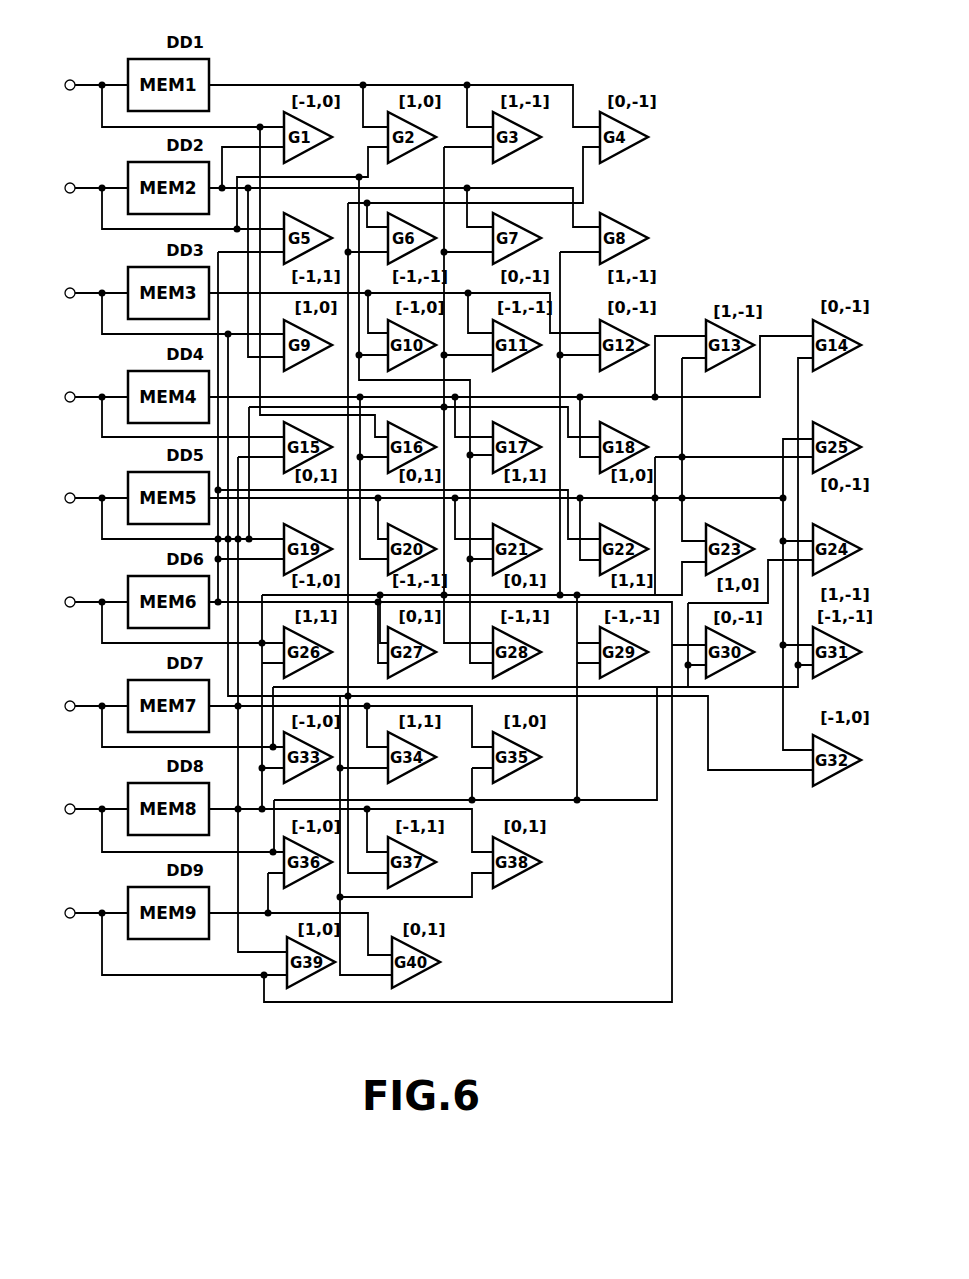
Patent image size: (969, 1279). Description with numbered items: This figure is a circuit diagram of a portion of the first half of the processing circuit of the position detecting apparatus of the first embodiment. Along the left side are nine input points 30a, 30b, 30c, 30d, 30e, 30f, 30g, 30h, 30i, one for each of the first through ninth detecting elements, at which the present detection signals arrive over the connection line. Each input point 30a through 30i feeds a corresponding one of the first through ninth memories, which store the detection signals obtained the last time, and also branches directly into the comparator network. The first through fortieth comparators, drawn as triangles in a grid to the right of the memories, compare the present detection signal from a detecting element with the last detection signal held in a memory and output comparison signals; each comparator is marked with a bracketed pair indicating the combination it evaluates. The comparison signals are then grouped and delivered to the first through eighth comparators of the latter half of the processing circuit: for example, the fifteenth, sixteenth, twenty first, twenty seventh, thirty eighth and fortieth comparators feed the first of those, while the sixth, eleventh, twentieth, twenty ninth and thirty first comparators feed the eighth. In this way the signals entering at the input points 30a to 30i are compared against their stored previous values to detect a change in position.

The input terminal 30a is at (68, 90).
The input terminal 30b is at (68, 193).
The input terminal 30c is at (68, 298).
The input terminal 30d is at (68, 402).
The input terminal 30e is at (68, 503).
The input terminal 30f is at (68, 607).
The input terminal 30g is at (68, 711).
The input terminal 30h is at (68, 814).
The input terminal 30i is at (68, 918).